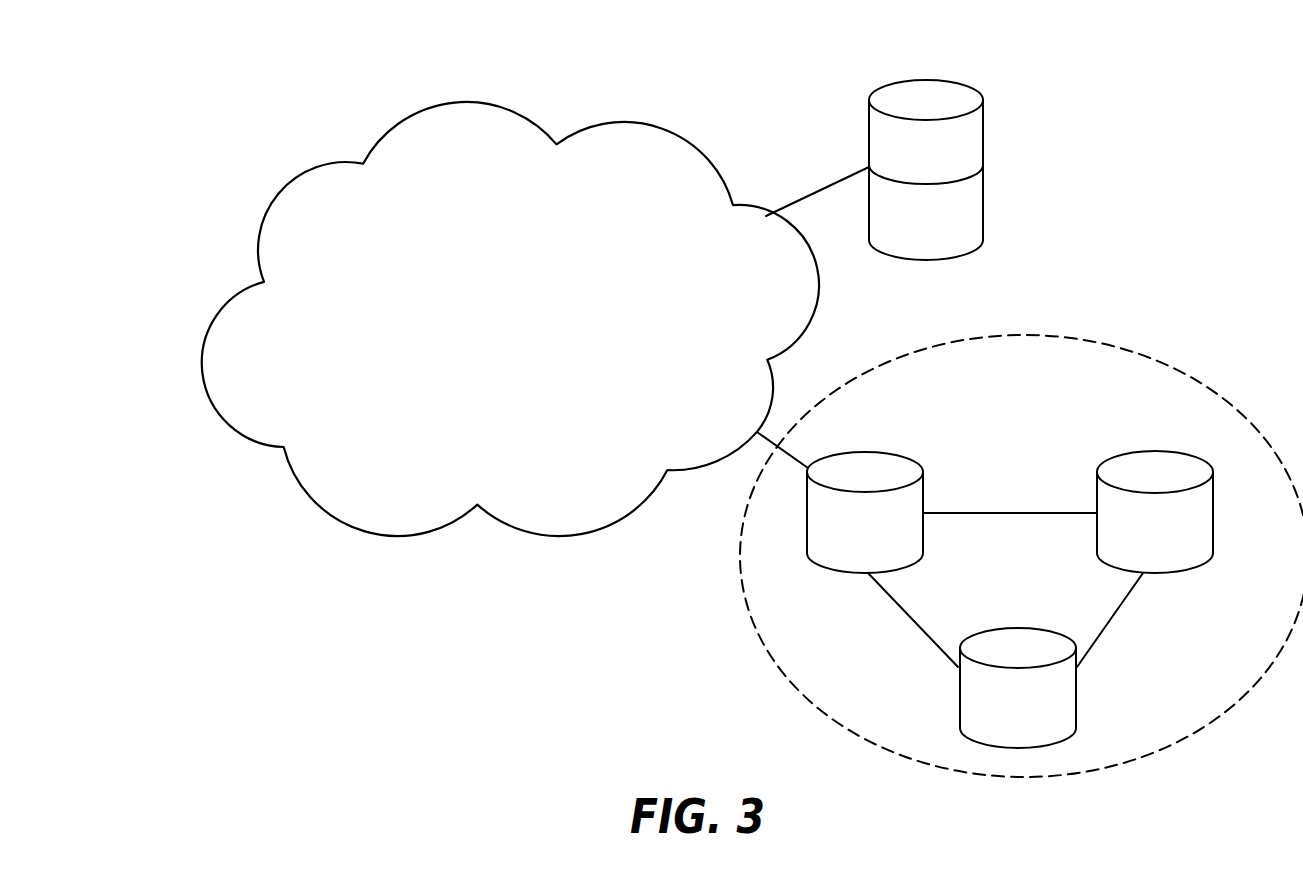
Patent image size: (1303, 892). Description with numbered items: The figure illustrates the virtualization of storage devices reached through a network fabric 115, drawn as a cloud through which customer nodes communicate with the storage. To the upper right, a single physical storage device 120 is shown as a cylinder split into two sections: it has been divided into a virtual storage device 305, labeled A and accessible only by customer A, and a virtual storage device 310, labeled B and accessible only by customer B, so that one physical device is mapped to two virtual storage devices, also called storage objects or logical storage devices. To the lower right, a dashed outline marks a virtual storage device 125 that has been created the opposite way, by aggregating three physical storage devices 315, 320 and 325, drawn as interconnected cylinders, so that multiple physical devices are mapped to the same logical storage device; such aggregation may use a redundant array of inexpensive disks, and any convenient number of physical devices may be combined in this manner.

The fabric 115 is at (590, 128).
The physical storage device 120 is at (960, 141).
The virtual storage device 305 is at (983, 135).
The virtual storage device 310 is at (983, 203).
The virtual storage device 125 is at (778, 672).
The physical storage device 315 is at (902, 468).
The physical storage device 320 is at (1192, 468).
The physical storage device 325 is at (1076, 707).